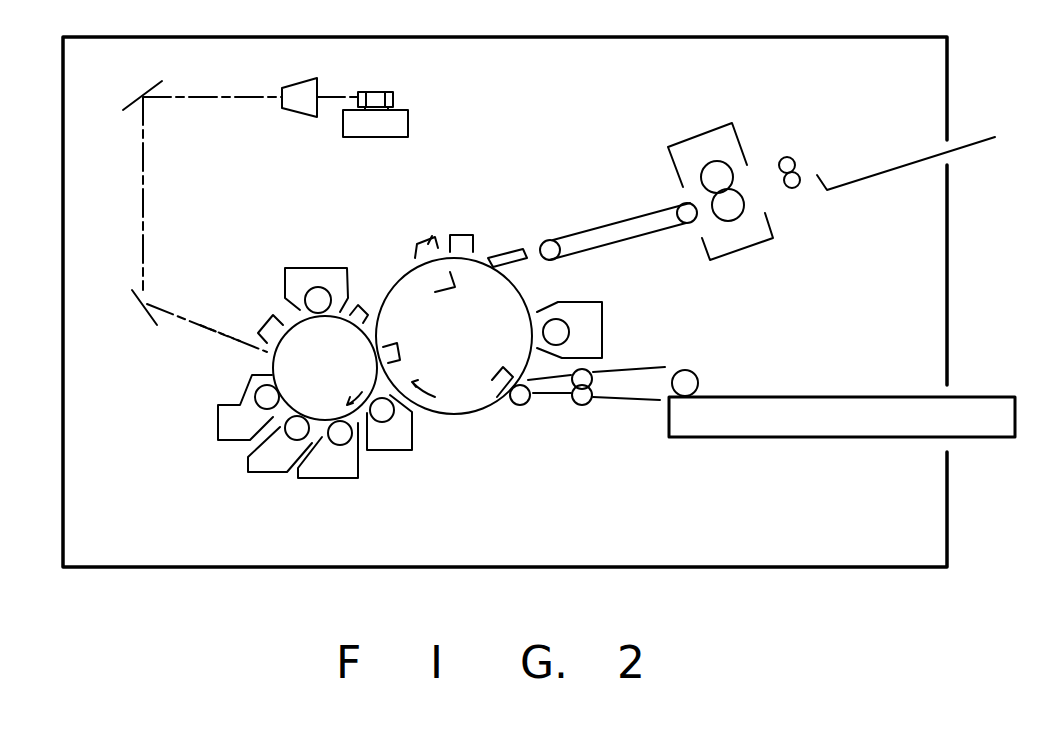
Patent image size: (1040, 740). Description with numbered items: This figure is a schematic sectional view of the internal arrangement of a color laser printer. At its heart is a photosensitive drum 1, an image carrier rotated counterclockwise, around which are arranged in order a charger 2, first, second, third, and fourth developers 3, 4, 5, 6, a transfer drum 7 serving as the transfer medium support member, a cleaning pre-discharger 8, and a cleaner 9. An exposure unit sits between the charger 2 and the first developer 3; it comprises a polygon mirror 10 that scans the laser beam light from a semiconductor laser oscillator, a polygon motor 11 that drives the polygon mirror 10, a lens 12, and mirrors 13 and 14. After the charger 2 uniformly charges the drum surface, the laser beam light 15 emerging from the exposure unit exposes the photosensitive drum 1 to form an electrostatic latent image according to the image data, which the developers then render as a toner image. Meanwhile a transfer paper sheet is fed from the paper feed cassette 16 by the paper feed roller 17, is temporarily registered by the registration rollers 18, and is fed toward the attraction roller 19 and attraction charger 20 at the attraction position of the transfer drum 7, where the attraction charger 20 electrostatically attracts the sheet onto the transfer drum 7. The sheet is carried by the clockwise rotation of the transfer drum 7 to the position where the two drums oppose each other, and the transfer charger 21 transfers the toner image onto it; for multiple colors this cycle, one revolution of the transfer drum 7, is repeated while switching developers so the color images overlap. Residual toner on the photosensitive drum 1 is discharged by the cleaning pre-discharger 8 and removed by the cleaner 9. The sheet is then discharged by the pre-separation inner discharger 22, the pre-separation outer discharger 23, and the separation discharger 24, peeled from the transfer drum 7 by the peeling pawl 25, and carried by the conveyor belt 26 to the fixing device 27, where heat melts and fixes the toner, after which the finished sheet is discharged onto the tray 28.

The photosensitive drum 1 is at (283, 368).
The charger 2 is at (273, 315).
The first developer 3 is at (218, 426).
The second developer 4 is at (248, 470).
The third developer 5 is at (332, 478).
The fourth developer 6 is at (391, 450).
The transfer drum 7 is at (458, 407).
The cleaning pre-discharger 8 is at (360, 306).
The cleaner 9 is at (327, 289).
The polygon mirror 10 is at (373, 91).
The polygon motor 11 is at (377, 137).
The lens 12 is at (288, 110).
The mirror 13 is at (141, 96).
The mirror 14 is at (137, 315).
The laser beam light 15 is at (222, 334).
The paper feed cassette 16 is at (773, 437).
The paper feed roller 17 is at (700, 372).
The registration rollers 18 is at (585, 404).
The attraction roller 19 is at (520, 405).
The attraction charger 20 is at (490, 403).
The transfer charger 21 is at (385, 343).
The pre-separation inner discharger 22 is at (406, 270).
The pre-separation outer discharger 23 is at (432, 236).
The separation discharger 24 is at (454, 234).
The peeling pawl 25 is at (503, 252).
The conveyor belt 26 is at (608, 226).
The fixing device 27 is at (677, 142).
The tray 28 is at (970, 145).